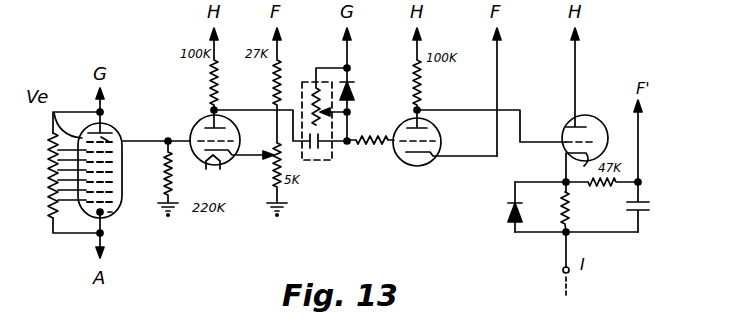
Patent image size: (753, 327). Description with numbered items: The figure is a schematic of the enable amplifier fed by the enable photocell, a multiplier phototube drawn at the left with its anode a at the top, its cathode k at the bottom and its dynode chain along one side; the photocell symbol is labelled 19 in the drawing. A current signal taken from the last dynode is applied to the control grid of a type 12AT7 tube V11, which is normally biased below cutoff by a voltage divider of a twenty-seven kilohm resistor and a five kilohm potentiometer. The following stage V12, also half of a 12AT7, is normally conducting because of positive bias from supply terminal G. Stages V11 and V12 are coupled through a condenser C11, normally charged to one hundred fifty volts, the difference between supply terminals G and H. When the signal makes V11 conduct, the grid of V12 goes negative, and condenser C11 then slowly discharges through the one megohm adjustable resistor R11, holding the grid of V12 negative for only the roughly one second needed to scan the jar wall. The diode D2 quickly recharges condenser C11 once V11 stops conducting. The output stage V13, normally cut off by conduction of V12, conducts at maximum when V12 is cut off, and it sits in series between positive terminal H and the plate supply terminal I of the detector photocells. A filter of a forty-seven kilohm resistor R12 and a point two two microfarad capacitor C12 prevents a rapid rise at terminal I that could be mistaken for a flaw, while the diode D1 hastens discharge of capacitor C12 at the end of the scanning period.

The photomultiplier tube 19 is at (124, 131).
The anode a is at (106, 134).
The cathode k is at (114, 218).
The type 12AT7 tube V11 is at (196, 124).
The type 12AT7 tube V12 is at (398, 128).
The type 12AT7 tube V13 is at (590, 118).
The adjustable resistor R11 is at (301, 86).
The 47 kilohm resistor R12 is at (562, 212).
The condenser C11 is at (318, 150).
The capacitor C12 is at (648, 213).
The diode D1 is at (507, 214).
The diode D2 is at (352, 92).